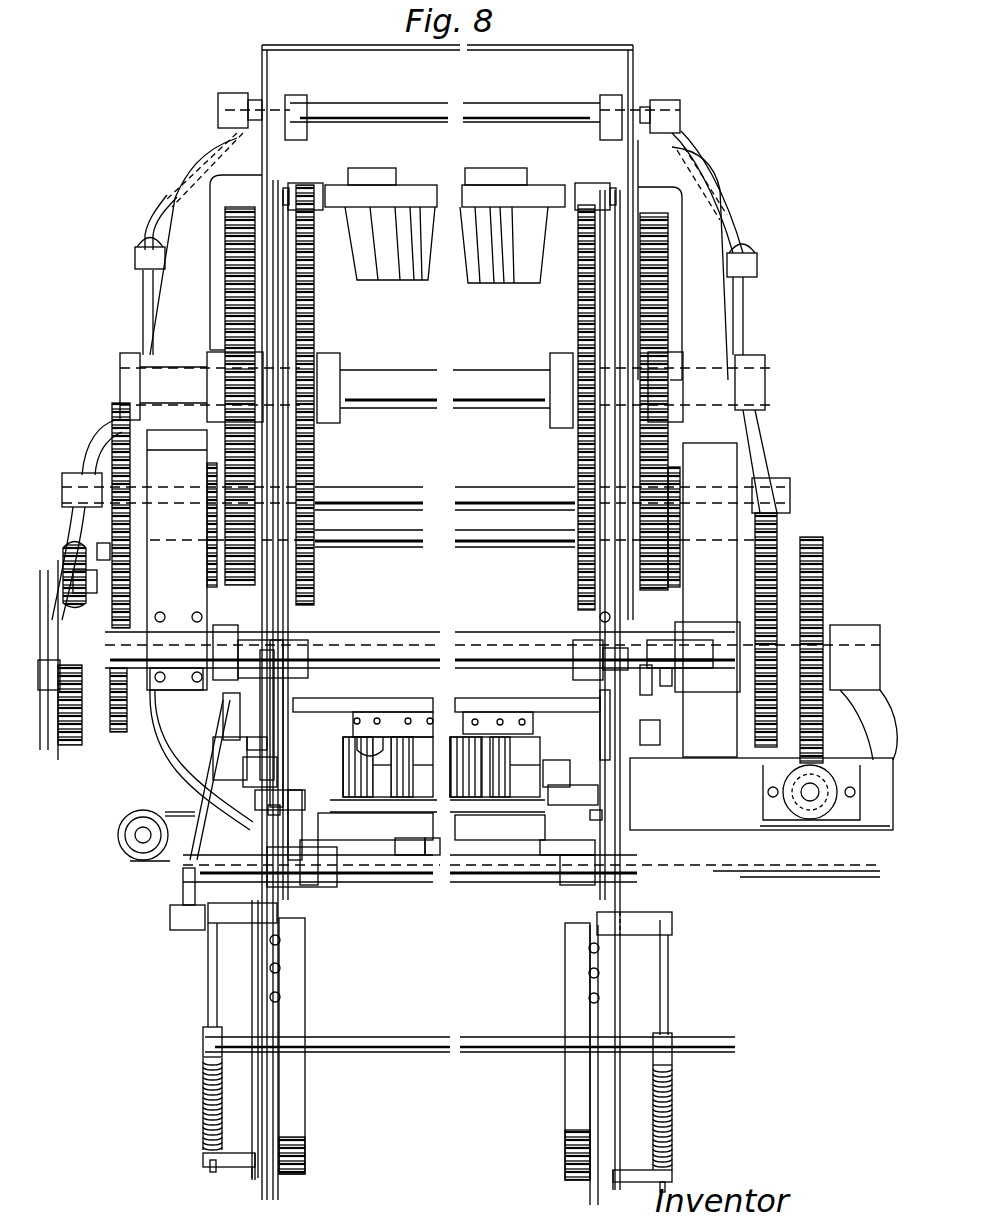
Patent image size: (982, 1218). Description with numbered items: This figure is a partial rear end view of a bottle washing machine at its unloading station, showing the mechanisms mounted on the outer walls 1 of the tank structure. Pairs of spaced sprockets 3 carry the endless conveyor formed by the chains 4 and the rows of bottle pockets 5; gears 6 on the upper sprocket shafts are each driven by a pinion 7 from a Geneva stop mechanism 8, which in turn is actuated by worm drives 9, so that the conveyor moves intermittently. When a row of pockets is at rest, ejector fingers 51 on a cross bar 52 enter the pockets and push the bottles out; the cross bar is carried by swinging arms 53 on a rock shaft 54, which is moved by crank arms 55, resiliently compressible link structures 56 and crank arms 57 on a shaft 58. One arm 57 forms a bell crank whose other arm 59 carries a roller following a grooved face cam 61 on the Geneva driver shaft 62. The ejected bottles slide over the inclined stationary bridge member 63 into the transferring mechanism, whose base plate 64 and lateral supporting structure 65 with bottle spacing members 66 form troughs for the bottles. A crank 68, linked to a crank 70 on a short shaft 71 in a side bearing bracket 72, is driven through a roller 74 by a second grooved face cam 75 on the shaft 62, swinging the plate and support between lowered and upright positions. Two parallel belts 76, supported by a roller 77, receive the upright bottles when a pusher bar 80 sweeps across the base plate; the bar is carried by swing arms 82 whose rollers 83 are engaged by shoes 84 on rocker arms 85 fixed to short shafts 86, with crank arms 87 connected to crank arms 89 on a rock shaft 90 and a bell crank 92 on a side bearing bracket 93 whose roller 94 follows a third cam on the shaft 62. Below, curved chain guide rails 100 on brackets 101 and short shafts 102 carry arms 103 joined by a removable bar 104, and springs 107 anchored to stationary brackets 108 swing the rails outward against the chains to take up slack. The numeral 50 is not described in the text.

The outer walls of tank structure 1 is at (632, 208).
The sprockets 3 is at (312, 330).
The chains 4 is at (292, 185).
The bottle holders or pockets 5 is at (500, 168).
The gears 6 is at (230, 235).
The pinion 7 is at (207, 470).
The Geneva stop mechanism 8 is at (155, 563).
The worm drives 9 is at (830, 755).
The gear 50 is at (55, 700).
The ejector fingers 51 is at (375, 712).
The cross bar 52 is at (480, 712).
The swinging arms 53 is at (600, 270).
The rock shaft 54 is at (395, 105).
The crank arms 55 is at (152, 222).
The resiliently compressible link structure 56 is at (137, 248).
The crank arms 57 is at (112, 430).
The shaft 58 is at (375, 490).
The bell crank arm 59 is at (45, 585).
The grooved face cam 61 is at (60, 745).
The driver shaft 62 is at (375, 642).
The inclined stationary bridge member 63 is at (500, 812).
The bottle supporting base plate 64 is at (410, 850).
The lateral bottle supporting structure 65 is at (436, 850).
The bottle spacing members 66 is at (335, 842).
The crank 68 is at (170, 912).
The crank 70 is at (210, 800).
The short shaft 71 is at (215, 625).
The side bearing bracket 72 is at (160, 745).
The roller 74 is at (70, 545).
The grooved face cam 75 is at (86, 568).
The belts 76 is at (165, 812).
The roller 77 is at (118, 845).
The pusher bar 80 is at (350, 815).
The swing arms 82 is at (285, 887).
The rollers 83 is at (275, 815).
The shoes 84 is at (282, 790).
The rocker arms 85 is at (282, 745).
The short shafts 86 is at (300, 670).
The crank arms 87 is at (223, 705).
The crank arms 89 is at (220, 740).
The rock shaft 90 is at (572, 775).
The bell crank 92 is at (660, 640).
The side bearing bracket 93 is at (698, 625).
The roller 94 is at (672, 685).
The curved conveyor chain guide rails 100 is at (300, 1100).
The brackets 101 is at (270, 935).
The short shafts 102 is at (640, 915).
The arms 103 is at (208, 1000).
The removable bar 104 is at (423, 1045).
The springs 107 is at (203, 1085).
The stationary brackets 108 is at (232, 1168).